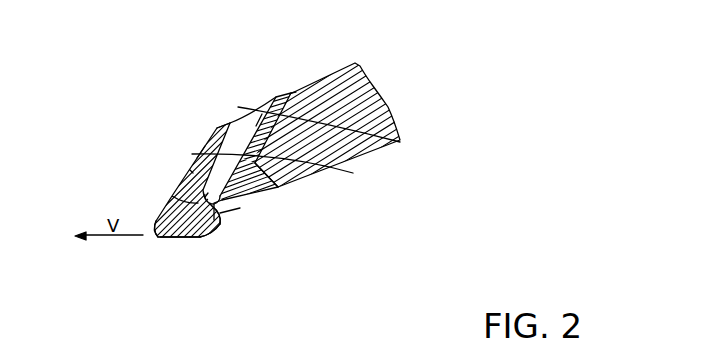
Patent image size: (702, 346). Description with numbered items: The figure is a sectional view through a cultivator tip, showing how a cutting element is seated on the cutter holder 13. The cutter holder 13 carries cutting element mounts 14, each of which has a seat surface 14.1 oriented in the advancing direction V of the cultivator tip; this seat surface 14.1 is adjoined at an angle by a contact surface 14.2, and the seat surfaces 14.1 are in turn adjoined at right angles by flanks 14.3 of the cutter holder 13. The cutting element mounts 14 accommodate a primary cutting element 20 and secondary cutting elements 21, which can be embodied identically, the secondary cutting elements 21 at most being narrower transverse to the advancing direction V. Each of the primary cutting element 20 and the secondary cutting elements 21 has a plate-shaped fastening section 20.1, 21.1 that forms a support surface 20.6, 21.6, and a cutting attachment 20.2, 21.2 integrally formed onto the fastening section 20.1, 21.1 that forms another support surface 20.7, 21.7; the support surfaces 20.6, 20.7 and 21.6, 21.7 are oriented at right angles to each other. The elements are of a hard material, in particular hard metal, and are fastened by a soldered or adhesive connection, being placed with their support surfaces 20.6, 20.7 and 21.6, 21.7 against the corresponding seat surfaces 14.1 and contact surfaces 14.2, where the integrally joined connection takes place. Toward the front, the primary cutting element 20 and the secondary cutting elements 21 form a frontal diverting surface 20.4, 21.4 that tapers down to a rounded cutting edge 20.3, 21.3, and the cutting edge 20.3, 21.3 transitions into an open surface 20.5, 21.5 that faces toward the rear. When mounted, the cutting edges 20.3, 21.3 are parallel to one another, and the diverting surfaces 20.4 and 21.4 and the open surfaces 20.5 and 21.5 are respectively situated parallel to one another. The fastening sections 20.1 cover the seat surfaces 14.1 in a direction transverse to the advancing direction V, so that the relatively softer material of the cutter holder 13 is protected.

The cutter holder 13 is at (328, 77).
The cutting element mounts 14 is at (226, 119).
The seat surface 14.1 is at (193, 173).
The contact surface 14.2 is at (210, 238).
The flanks 14.3 is at (208, 193).
The primary cutting element 20 is at (192, 140).
The fastening section 20.1 is at (231, 124).
The cutting attachment 20.2 is at (173, 240).
The cutting edge 20.3 is at (155, 237).
The diverting surface 20.4 is at (197, 157).
The open surface 20.5 is at (195, 240).
The support surface 20.6 is at (293, 170).
The support surface 20.7 is at (218, 218).
The secondary cutting elements 21 is at (261, 103).
The fastening section 21.1 is at (292, 92).
The cutting attachment 21.2 is at (220, 213).
The cutting edge 21.3 is at (214, 220).
The diverting surface 21.4 is at (260, 115).
The open surface 21.5 is at (214, 203).
The support surface 21.6 is at (400, 140).
The support surface 21.7 is at (298, 186).